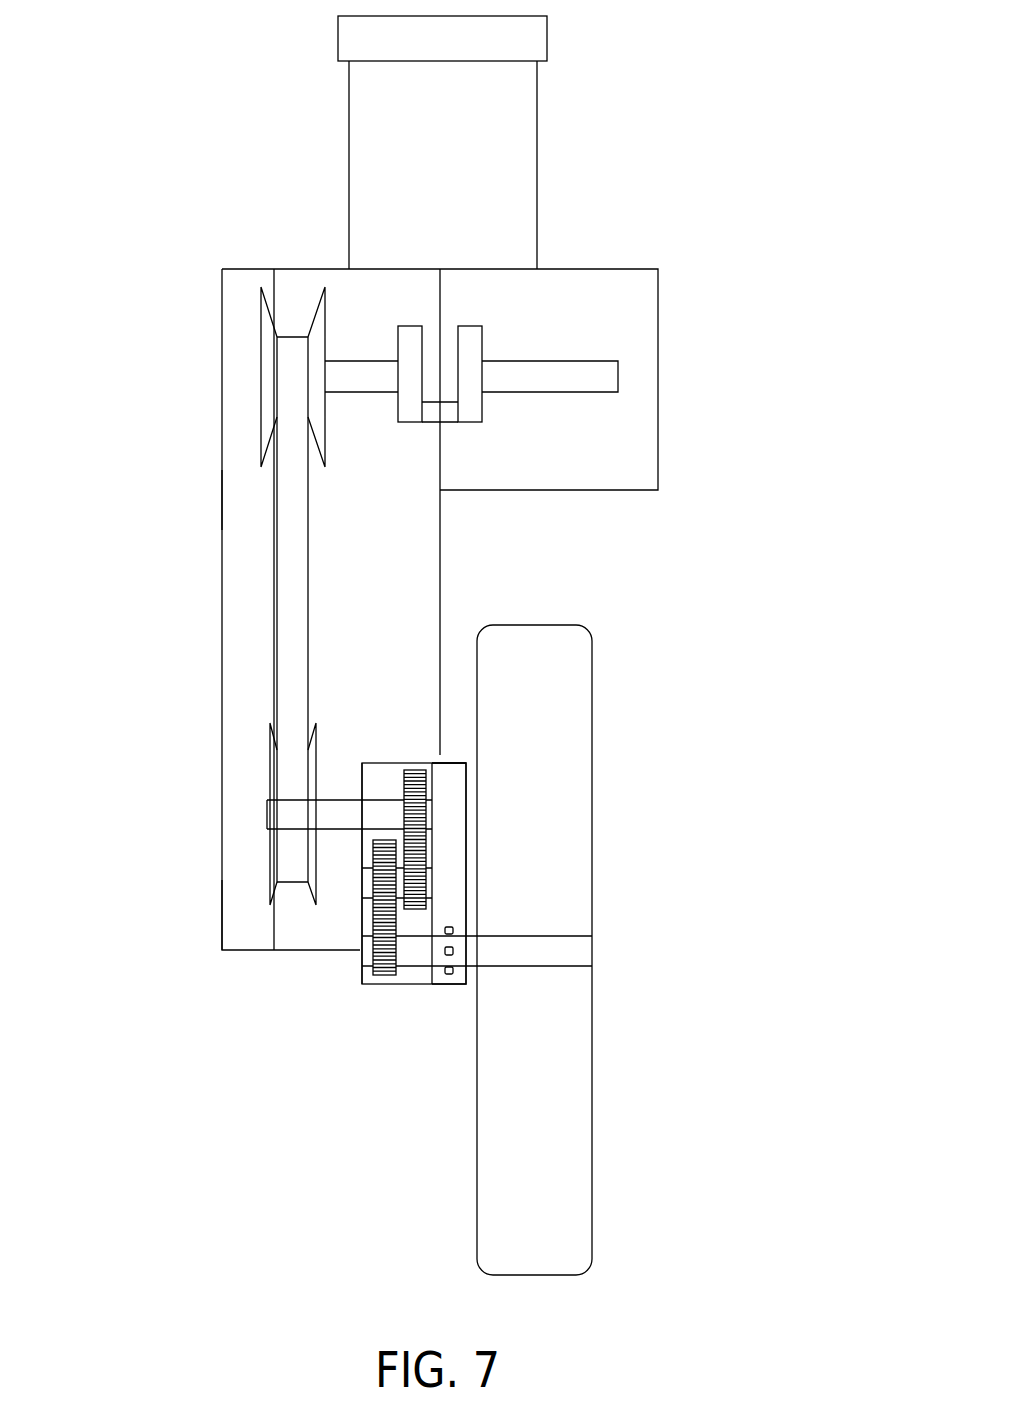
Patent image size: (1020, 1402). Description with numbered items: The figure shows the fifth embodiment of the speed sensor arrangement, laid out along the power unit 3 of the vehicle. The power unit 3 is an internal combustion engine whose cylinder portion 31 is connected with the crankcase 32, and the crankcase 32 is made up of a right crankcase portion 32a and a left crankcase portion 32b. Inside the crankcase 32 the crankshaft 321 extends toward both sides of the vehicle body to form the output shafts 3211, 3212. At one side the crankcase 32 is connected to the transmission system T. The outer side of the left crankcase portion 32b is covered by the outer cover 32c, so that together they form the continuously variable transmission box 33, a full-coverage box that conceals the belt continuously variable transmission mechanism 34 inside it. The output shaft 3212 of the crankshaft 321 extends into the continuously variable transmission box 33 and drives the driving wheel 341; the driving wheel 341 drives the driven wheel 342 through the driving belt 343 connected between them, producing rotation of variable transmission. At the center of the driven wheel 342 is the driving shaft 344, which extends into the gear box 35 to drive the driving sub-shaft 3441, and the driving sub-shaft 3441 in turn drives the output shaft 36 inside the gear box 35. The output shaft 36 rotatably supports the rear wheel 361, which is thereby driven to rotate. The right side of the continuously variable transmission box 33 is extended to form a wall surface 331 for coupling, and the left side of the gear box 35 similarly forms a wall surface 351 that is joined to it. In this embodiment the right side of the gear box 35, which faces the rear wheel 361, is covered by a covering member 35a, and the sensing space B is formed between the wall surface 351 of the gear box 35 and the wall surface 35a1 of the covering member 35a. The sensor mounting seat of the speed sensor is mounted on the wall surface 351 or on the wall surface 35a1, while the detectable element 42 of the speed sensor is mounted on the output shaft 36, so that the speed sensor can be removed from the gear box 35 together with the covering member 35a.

The power unit 3 is at (455, 584).
The cylinder portion 31 is at (512, 128).
The crankcase 32 is at (455, 609).
The right crankcase portion 32a is at (648, 325).
The left crankcase portion 32b is at (422, 568).
The outer cover 32c is at (291, 609).
The crankshaft 321 is at (470, 343).
The output shaft 3211 is at (585, 380).
The output shaft 3212 is at (363, 372).
The continuously variable transmission box 33 is at (210, 903).
The wall surface 331 is at (363, 782).
The belt continuously variable transmission mechanism 34 is at (231, 377).
The driving wheel 341 is at (268, 362).
The driven wheel 342 is at (275, 767).
The driving belt 343 is at (293, 627).
The driving shaft 344 is at (282, 815).
The driving sub-shaft 3441 is at (367, 883).
The gear box 35 is at (417, 880).
The wall surface 351 is at (360, 918).
The covering member 35a is at (467, 807).
The wall surface 35a1 is at (465, 780).
The output shaft 36 is at (568, 952).
The rear wheel 361 is at (573, 1073).
The detectable element 42 is at (450, 972).
The sensing space B is at (450, 858).
The transmission system T is at (184, 499).